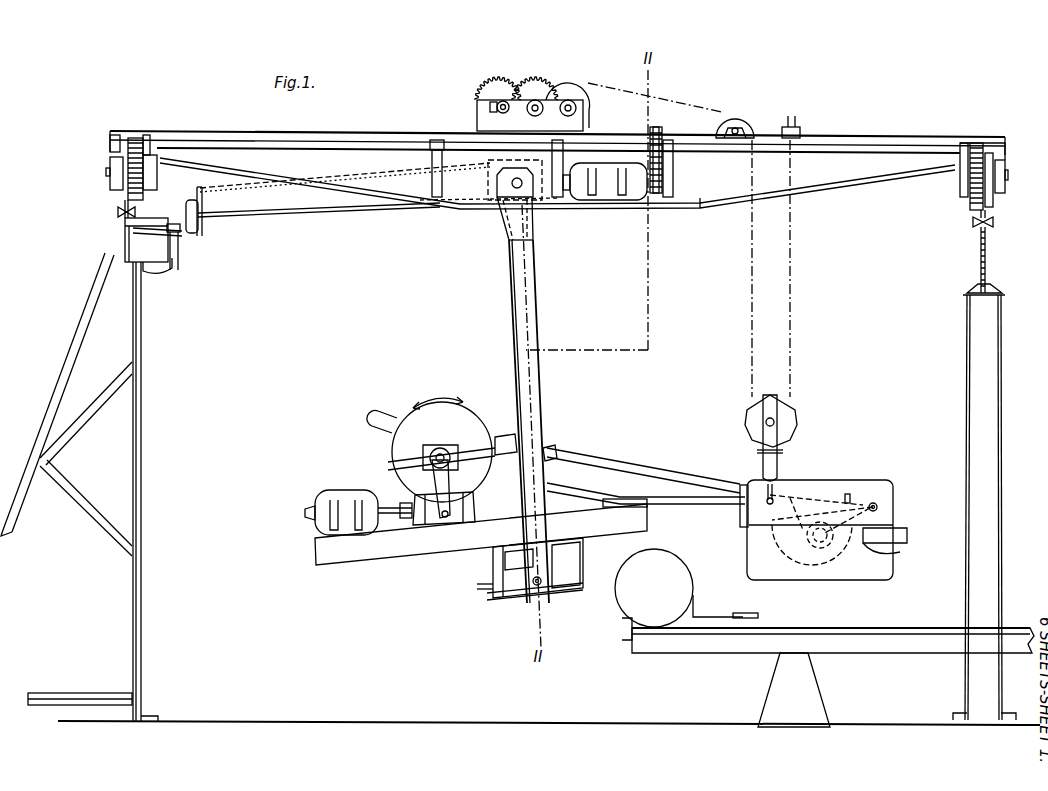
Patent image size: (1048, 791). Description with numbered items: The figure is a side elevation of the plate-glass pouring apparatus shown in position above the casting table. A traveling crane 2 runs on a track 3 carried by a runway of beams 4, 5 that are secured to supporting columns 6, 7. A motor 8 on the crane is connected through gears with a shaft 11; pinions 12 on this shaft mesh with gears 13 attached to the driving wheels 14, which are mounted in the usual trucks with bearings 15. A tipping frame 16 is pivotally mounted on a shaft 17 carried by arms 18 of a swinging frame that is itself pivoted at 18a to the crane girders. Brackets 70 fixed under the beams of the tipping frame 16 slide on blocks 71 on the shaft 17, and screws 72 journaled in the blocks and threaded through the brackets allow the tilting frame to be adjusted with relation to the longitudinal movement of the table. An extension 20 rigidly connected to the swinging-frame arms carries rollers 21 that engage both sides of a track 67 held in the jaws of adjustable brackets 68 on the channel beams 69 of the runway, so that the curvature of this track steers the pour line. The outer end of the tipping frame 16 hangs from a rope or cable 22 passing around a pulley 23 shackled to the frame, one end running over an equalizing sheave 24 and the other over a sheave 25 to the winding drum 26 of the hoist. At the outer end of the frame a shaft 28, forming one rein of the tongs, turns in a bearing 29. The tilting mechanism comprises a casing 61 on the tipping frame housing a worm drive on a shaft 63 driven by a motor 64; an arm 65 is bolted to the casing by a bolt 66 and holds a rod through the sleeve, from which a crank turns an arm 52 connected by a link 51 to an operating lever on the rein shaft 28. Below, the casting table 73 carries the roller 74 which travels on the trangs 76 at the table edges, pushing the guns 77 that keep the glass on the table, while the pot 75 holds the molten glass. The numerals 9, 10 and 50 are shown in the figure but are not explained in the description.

The traveling crane 2 is at (557, 183).
The track 3 is at (119, 212).
The beam 4 is at (987, 256).
The beam 5 is at (125, 232).
The supporting column 6 is at (992, 347).
The supporting column 7 is at (80, 340).
The motor 8 is at (617, 203).
The gear 9 is at (656, 197).
The pinion 10 is at (651, 130).
The shaft 11 is at (878, 150).
The pinion 12 is at (128, 142).
The gear 13 is at (141, 190).
The driving wheel 14 is at (112, 165).
The bearing 15 is at (152, 175).
The tipping frame 16 is at (420, 548).
The shaft 17 is at (527, 594).
The arm 18 is at (520, 289).
The pivot 18a is at (512, 183).
The extension 20 is at (300, 200).
The roller 21 is at (205, 226).
The rope or cable 22 is at (797, 333).
The pulley 23 is at (797, 428).
The equalizing sheave 24 is at (795, 120).
The sheave 25 is at (733, 122).
The winding drum 26 is at (567, 95).
The shaft 28 is at (833, 546).
The bearing 29 is at (813, 560).
The carriage 50 is at (858, 500).
The link 51 is at (634, 462).
The arm 52 is at (388, 420).
The casing or frame 61 is at (442, 452).
The shaft 63 is at (395, 505).
The motor 64 is at (345, 490).
The arm 65 is at (441, 486).
The bolt 66 is at (460, 508).
The track 67 is at (182, 255).
The bracket 68 is at (153, 272).
The channel beam 69 is at (146, 240).
The bracket 70 is at (494, 566).
The block 71 is at (530, 584).
The screw 72 is at (477, 586).
The casting table 73 is at (828, 672).
The roller 74 is at (654, 588).
The pot 75 is at (896, 551).
The trang 76 is at (842, 629).
The gun 77 is at (725, 605).